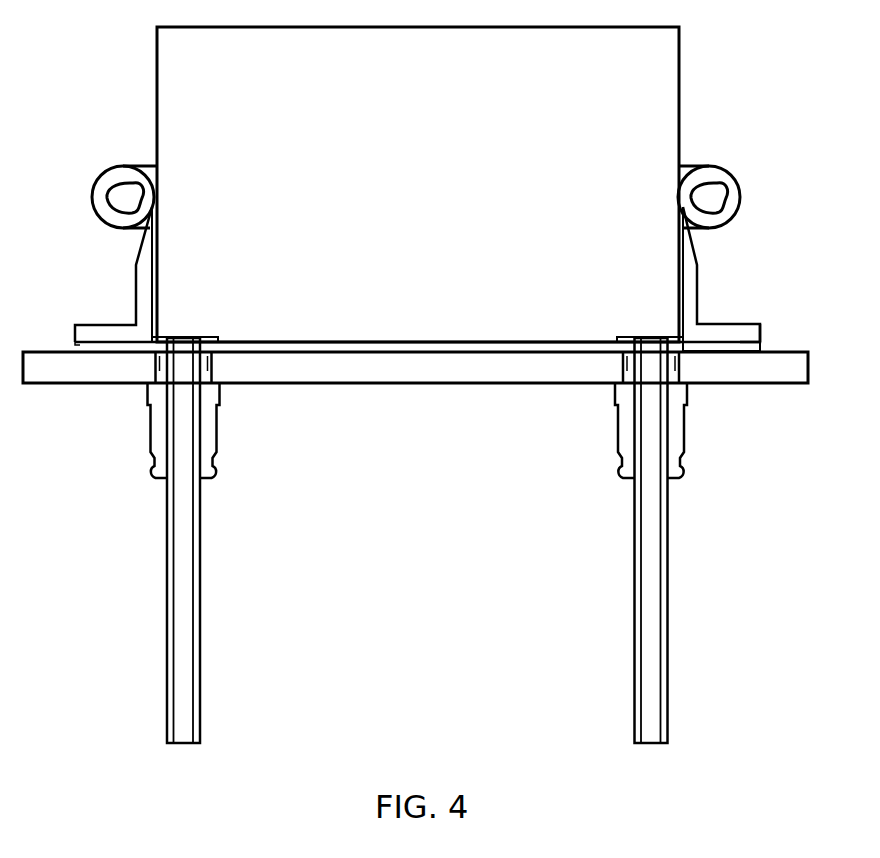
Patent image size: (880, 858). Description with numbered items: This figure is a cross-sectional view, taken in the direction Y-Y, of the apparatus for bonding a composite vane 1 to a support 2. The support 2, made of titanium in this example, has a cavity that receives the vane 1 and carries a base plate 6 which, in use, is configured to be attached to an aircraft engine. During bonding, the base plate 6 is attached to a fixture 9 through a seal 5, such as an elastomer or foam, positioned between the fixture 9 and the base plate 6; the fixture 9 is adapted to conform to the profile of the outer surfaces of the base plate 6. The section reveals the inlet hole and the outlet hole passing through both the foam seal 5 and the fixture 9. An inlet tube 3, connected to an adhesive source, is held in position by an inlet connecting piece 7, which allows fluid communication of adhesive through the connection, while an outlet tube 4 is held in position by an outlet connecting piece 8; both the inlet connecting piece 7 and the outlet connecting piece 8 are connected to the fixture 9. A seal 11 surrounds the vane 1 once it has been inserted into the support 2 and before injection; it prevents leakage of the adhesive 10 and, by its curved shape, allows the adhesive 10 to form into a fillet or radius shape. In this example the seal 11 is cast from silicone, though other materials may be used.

The composite vane 1 is at (680, 82).
The support 2 is at (688, 312).
The inlet tube 3 is at (182, 552).
The outlet tube 4 is at (652, 555).
The seal 5 is at (748, 349).
The base plate 6 is at (748, 335).
The inlet connecting piece 7 is at (207, 428).
The outlet connecting piece 8 is at (672, 435).
The fixture 9 is at (797, 370).
The adhesive 10 is at (680, 277).
The seal 11 is at (722, 167).